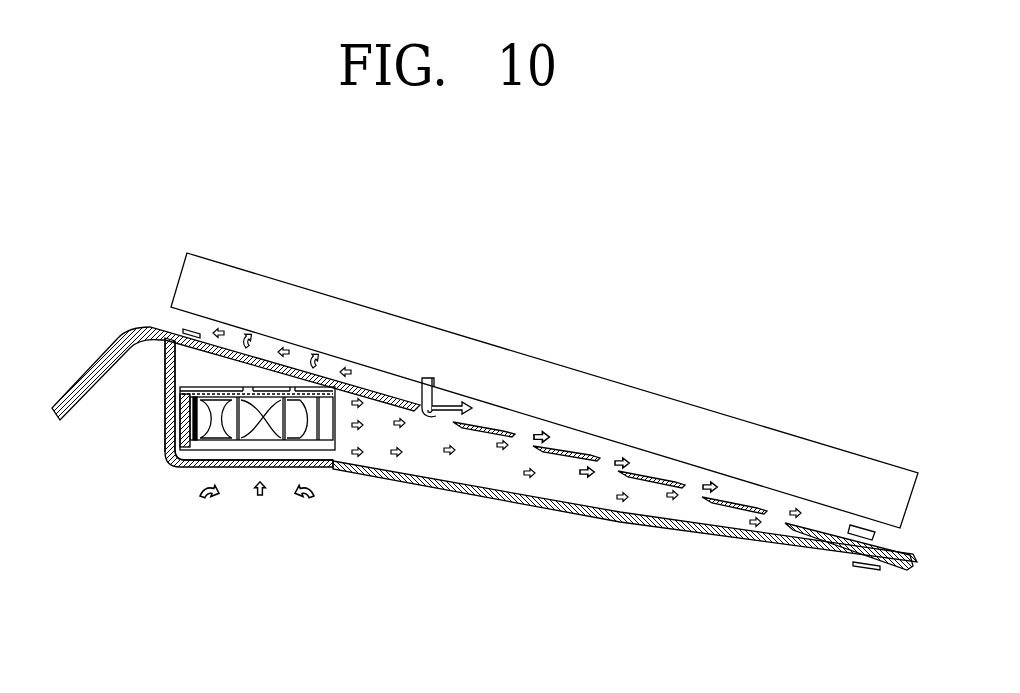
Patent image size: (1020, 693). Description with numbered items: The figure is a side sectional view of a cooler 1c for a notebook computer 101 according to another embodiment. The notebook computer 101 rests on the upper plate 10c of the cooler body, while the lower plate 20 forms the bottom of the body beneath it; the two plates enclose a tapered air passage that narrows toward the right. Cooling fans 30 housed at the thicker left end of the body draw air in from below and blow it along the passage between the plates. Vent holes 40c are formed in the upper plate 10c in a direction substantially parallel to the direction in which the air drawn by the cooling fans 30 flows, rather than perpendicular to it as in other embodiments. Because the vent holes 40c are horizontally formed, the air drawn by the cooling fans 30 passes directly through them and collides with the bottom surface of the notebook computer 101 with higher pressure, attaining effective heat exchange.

The cooler 1c is at (500, 546).
The upper plate 10c is at (827, 530).
The lower plate 20 is at (690, 535).
The cooling fans 30 is at (212, 453).
The vent holes 40c is at (473, 420).
The notebook computer 101 is at (845, 467).